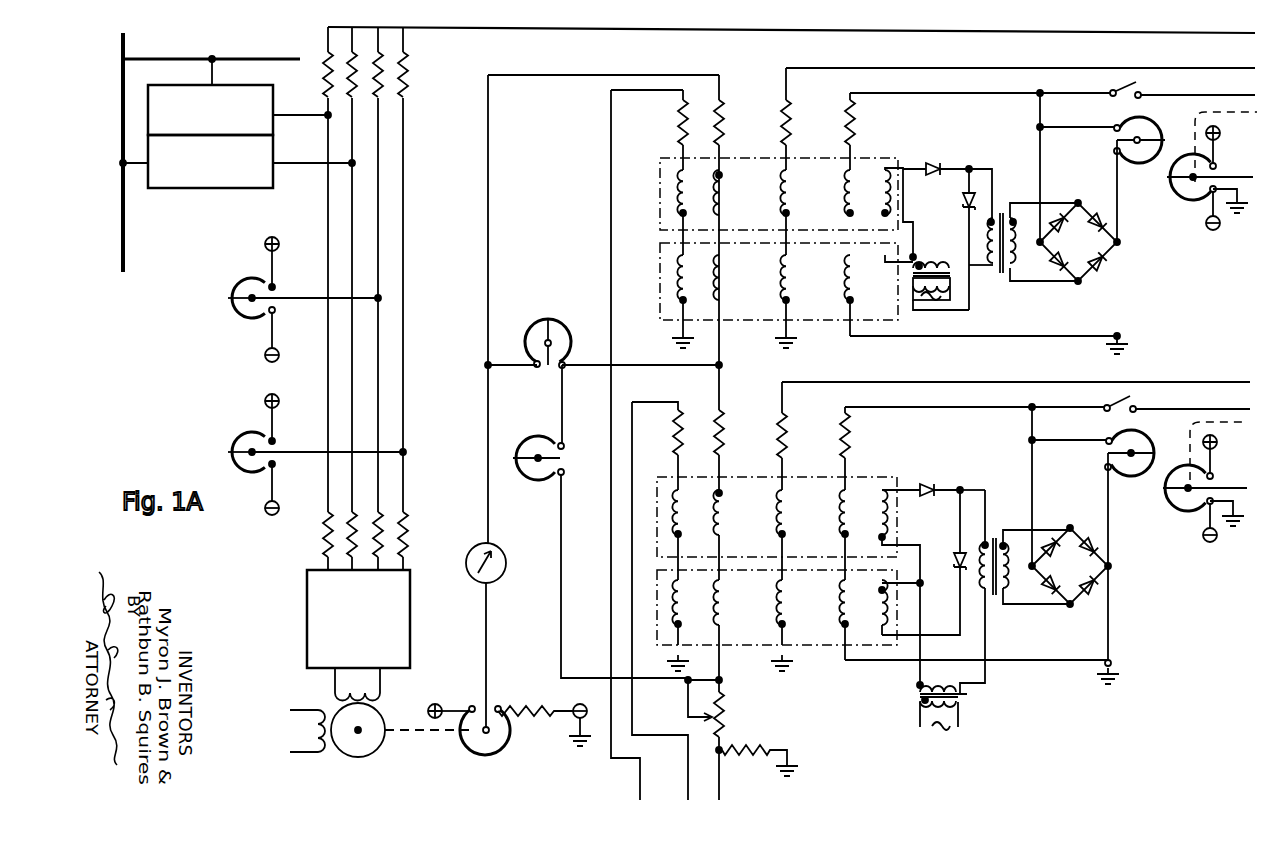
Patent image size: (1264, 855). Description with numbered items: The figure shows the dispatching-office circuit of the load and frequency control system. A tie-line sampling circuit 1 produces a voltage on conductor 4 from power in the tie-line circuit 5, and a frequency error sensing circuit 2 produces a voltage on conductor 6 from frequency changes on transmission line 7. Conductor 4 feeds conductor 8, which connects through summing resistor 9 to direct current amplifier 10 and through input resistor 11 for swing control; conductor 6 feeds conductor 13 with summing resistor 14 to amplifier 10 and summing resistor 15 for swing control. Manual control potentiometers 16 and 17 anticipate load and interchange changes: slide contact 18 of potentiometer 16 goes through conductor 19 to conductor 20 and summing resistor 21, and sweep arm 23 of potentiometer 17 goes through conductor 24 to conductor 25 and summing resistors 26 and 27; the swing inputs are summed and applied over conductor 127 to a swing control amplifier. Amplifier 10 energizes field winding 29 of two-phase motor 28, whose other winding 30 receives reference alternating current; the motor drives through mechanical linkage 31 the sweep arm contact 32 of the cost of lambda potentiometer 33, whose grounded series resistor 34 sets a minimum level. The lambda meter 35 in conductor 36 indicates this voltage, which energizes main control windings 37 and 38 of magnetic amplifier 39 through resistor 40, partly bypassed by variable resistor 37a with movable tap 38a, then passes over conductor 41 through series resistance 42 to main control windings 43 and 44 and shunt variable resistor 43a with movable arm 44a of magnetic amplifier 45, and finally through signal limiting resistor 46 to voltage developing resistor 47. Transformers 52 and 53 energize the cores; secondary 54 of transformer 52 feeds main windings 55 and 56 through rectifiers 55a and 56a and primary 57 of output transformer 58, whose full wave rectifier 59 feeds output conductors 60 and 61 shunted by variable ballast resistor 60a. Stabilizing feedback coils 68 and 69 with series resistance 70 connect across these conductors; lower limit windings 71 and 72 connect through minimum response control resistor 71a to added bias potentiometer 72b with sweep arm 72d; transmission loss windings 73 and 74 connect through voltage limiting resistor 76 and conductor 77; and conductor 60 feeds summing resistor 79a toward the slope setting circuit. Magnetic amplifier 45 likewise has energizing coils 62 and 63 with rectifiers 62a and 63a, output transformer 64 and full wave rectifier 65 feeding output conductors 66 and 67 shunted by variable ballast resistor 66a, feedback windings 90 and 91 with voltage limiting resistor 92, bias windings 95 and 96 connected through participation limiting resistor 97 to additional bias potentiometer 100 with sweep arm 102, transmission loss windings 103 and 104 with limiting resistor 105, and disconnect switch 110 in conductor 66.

The tie-line sampling circuit 1 is at (227, 85).
The frequency error sensing circuit 2 is at (203, 196).
The output conductor 4 is at (290, 120).
The tie-line circuit 5 is at (228, 59).
The output conductor 6 is at (290, 168).
The system power transmission line 7 is at (123, 245).
The conductor 8 is at (322, 382).
The summing resistor 9 is at (327, 513).
The direct current amplifier 10 is at (410, 598).
The input resistor 11 is at (323, 54).
The conductor 13 is at (352, 412).
The series summing resistor 14 is at (351, 513).
The summing resistor 15 is at (352, 55).
The manual control potentiometer 16 is at (240, 283).
The manual control potentiometer 17 is at (239, 437).
The slide contact 18 is at (229, 298).
The conductor 19 is at (289, 303).
The conductor 20 is at (388, 412).
The summing resistor 21 is at (377, 513).
The sweep arm 23 is at (227, 453).
The conductor 24 is at (292, 457).
The conductor 25 is at (403, 432).
The summing resistor 26 is at (407, 536).
The summing resistor 27 is at (409, 54).
The two-phase motor 28 is at (381, 718).
The field winding 29 is at (382, 697).
The field winding 30 is at (316, 745).
The mechanical linkage 31 is at (412, 734).
The sweep arm contact 32 is at (487, 755).
The cost of lambda developing potentiometer 33 is at (508, 736).
The series resistor 34 is at (520, 709).
The lambda meter 35 is at (493, 550).
The conductor 36 is at (488, 475).
The main control winding 37 is at (720, 195).
The variable resistor 37a is at (528, 321).
The main control winding 38 is at (720, 280).
The movable tap 38a is at (557, 318).
The control magnetic amplifier 39 is at (973, 139).
The resistor 40 is at (721, 133).
The conductor 41 is at (719, 384).
The series resistance 42 is at (723, 438).
The main control winding 43 is at (720, 516).
The variable resistor 43a is at (523, 438).
The main control winding 44 is at (720, 606).
The movable arm 44a is at (519, 462).
The magnetic amplifier 45 is at (950, 449).
The signal limiting resistor 46 is at (724, 714).
The voltage developing resistor 47 is at (740, 755).
The transformer 52 is at (916, 302).
The transformer 53 is at (962, 697).
The secondary 54 is at (922, 266).
The main winding 55 is at (852, 195).
The rectifier 55a is at (942, 164).
The main winding 56 is at (852, 280).
The rectifier 56a is at (964, 194).
The primary 57 is at (988, 235).
The output transformer 58 is at (1007, 295).
The full wave rectifier 59 is at (1088, 252).
The output conductor 60 is at (1050, 92).
The variable ballast resistor 60a is at (1148, 117).
The output conductor 61 is at (1008, 338).
The energizing coil 62 is at (888, 511).
The rectifier 62a is at (924, 486).
The energizing coil 63 is at (883, 591).
The rectifier 63a is at (959, 558).
The output transformer 64 is at (1012, 525).
The full wave rectifier 65 is at (1079, 577).
The output conductor 66 is at (978, 407).
The variable ballast resistor 66a is at (1136, 425).
The output conductor 67 is at (1022, 662).
The stabilizing feedback coil 68 is at (848, 199).
The stabilizing feedback coil 69 is at (848, 287).
The series resistance 70 is at (853, 133).
The lower limit setting control winding 71 is at (787, 193).
The minimum response control resistor 71a is at (790, 133).
The lower limit setting control winding 72 is at (787, 278).
The added bias setting potentiometer 72b is at (1184, 200).
The sweep arm 72d is at (1168, 178).
The transmission loss bias control winding 73 is at (684, 195).
The transmission loss bias control winding 74 is at (684, 280).
The voltage limiting resistor 76 is at (682, 134).
The conductor 77 is at (611, 138).
The summing resistor 79a is at (1139, 87).
The feedback winding 90 is at (843, 520).
The feedback winding 91 is at (842, 618).
The series voltage limiting resistor 92 is at (846, 438).
The bias winding 95 is at (783, 504).
The bias winding 96 is at (783, 597).
The voltage participation limiting resistor 97 is at (785, 438).
The additional bias setting potentiometer 100 is at (1176, 532).
The sweep arm 102 is at (1165, 488).
The transmission loss winding 103 is at (678, 481).
The transmission loss winding 104 is at (675, 630).
The voltage participating limiting resistor 105 is at (678, 440).
The disconnect switch 110 is at (1109, 395).
The conductor 127 is at (722, 32).